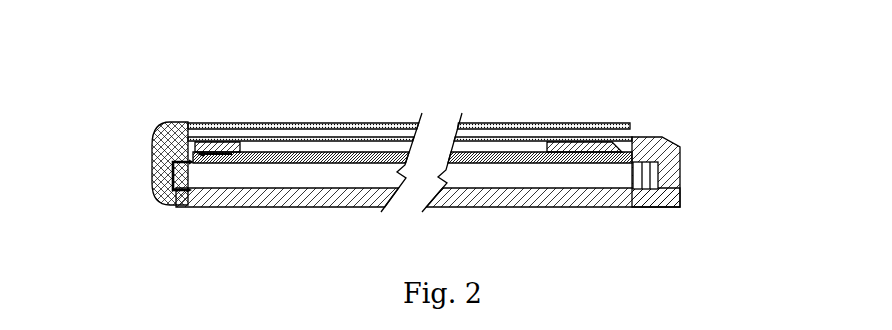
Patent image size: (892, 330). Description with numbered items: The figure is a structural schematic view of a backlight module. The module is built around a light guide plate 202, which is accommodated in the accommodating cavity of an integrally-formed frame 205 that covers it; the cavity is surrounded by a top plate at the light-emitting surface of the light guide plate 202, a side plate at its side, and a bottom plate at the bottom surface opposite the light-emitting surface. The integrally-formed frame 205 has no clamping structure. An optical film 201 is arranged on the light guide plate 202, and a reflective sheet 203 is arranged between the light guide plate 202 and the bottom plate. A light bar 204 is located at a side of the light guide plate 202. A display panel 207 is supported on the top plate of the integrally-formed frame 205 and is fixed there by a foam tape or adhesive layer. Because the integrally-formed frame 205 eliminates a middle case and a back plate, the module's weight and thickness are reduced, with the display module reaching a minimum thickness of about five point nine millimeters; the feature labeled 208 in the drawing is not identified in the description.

The optical film 201 is at (182, 150).
The light guide plate 202 is at (174, 163).
The reflective sheet 203 is at (170, 189).
The light bar 204 is at (655, 178).
The integrally-formed frame 205 is at (728, 147).
The display panel 207 is at (527, 129).
The adhesive 208 is at (592, 139).